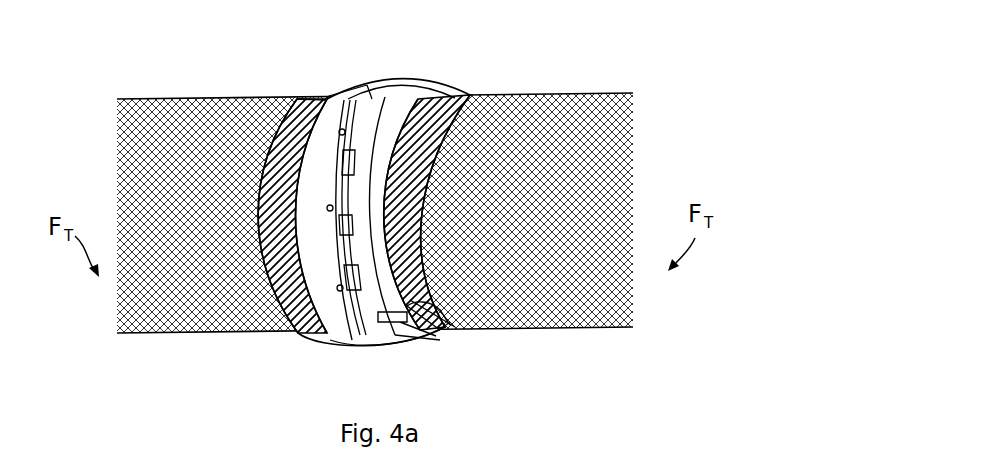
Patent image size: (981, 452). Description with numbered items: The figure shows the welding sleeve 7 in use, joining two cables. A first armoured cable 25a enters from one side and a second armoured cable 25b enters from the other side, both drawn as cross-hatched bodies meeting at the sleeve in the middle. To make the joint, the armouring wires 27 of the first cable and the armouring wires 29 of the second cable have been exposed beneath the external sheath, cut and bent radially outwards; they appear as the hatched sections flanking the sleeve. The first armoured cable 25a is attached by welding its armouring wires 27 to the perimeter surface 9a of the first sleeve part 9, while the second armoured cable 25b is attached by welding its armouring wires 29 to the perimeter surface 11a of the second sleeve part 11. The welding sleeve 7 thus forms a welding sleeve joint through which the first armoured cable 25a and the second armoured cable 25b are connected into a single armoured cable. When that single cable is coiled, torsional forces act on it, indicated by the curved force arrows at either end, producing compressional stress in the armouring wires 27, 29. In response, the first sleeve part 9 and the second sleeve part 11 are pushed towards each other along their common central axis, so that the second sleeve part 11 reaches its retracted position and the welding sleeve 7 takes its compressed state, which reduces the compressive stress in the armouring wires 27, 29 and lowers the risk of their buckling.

The welding sleeve 7 is at (400, 70).
The first sleeve part 9 is at (342, 318).
The perimeter surface 9a is at (284, 101).
The second sleeve part 11 is at (438, 330).
The perimeter surface 11a is at (432, 322).
The armouring wires 27 is at (301, 103).
The armouring wires 29 is at (462, 97).
The first armoured cable 25a is at (117, 157).
The second armoured cable 25b is at (633, 133).